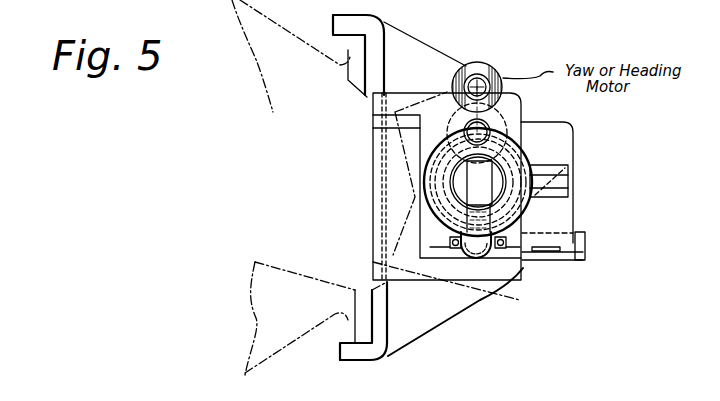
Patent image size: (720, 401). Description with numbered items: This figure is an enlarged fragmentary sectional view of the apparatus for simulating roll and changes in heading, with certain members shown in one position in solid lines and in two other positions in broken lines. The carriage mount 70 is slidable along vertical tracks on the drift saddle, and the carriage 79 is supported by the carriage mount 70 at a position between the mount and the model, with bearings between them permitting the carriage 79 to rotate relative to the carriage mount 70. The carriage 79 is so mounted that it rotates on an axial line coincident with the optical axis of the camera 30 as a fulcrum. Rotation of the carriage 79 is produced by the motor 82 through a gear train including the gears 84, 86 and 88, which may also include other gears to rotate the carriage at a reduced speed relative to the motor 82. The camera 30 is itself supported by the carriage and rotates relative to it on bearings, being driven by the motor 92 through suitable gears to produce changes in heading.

The camera 30 is at (520, 262).
The carriage mount 70 is at (292, 335).
The carriage 79 is at (573, 212).
The motor 82 is at (452, 80).
The gear 84 is at (573, 175).
The gear 86 is at (532, 132).
The gear 88 is at (477, 87).
The motor 92 is at (572, 250).